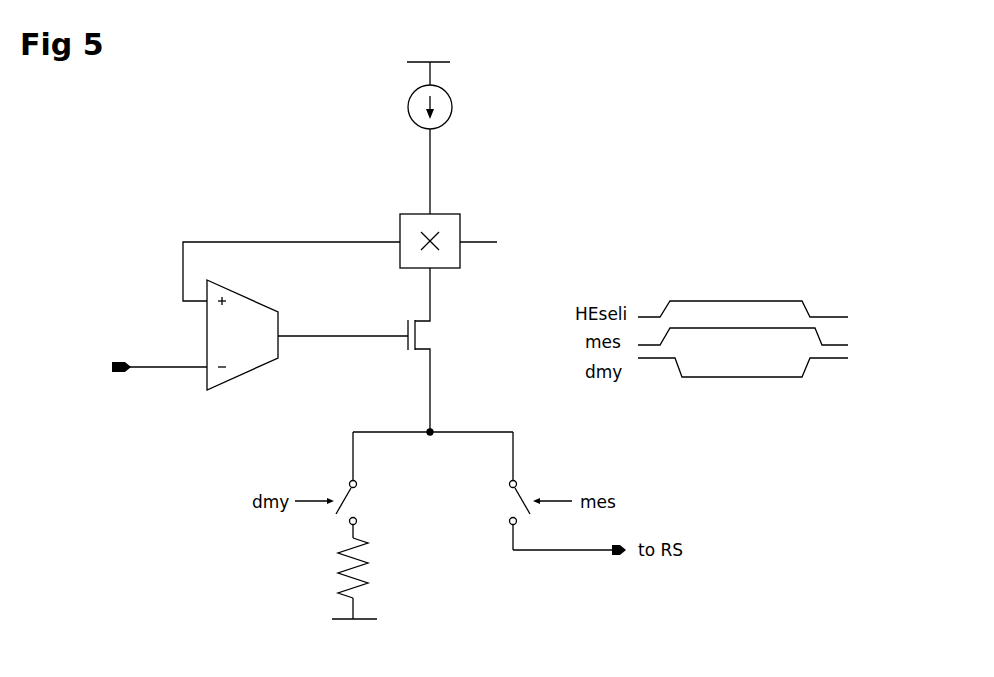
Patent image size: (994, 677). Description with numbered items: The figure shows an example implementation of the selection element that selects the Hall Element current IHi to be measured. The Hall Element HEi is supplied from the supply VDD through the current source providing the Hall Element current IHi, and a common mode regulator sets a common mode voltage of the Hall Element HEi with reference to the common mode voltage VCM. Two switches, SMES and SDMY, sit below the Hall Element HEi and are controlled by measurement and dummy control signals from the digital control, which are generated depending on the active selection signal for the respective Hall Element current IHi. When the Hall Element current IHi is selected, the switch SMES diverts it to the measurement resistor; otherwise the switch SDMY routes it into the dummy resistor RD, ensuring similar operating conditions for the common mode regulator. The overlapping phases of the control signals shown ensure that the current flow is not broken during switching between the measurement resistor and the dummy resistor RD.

The supply voltage VDD is at (428, 51).
The Hall Element current IHi is at (446, 107).
The Hall element HEi is at (436, 230).
The common mode voltage input VCM is at (138, 366).
The switch SDMY is at (371, 485).
The switch SMES is at (497, 491).
The dummy resistor RD is at (336, 578).